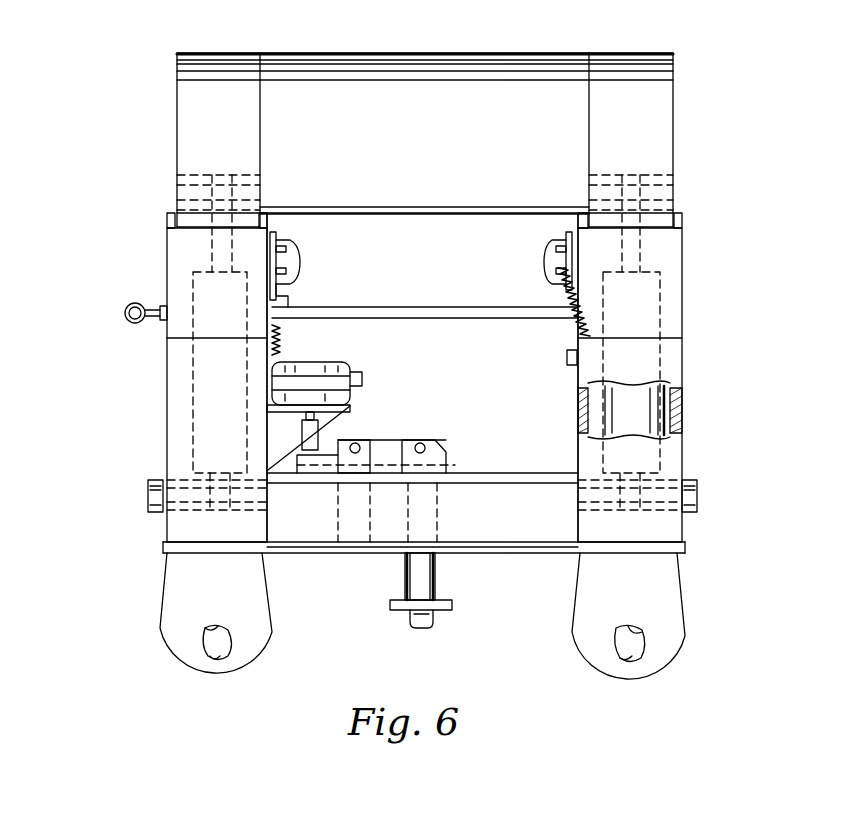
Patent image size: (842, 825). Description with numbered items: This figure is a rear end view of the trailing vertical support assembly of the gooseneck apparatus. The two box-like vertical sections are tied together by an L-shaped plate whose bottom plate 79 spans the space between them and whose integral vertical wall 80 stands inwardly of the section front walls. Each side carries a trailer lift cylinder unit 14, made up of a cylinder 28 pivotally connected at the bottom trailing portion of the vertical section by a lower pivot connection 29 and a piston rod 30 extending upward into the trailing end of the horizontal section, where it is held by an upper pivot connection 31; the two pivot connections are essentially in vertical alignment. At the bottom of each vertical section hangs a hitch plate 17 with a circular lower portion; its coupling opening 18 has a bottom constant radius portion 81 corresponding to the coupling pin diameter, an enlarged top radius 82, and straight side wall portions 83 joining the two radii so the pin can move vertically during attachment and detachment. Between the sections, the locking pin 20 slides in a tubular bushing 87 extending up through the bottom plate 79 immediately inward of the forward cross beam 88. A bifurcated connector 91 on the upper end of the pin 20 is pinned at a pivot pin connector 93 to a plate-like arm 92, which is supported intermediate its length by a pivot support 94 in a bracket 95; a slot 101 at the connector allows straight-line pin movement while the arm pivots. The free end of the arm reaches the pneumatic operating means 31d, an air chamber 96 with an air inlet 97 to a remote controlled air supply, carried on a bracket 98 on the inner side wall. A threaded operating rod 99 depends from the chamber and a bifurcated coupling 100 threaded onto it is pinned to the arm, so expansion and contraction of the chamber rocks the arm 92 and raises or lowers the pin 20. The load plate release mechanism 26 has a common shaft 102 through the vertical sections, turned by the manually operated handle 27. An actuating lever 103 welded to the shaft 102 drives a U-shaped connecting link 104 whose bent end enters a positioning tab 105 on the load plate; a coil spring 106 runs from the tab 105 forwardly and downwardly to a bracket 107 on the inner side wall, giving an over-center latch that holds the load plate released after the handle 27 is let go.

The trailer lift cylinder unit 14 is at (193, 381).
The hitch plate 17 is at (272, 664).
The coupling opening 18 is at (200, 638).
The locking pin 20 is at (430, 629).
The locking plate release mechanism 26 is at (310, 283).
The manually operated handle 27 is at (125, 313).
The cylinder 28 is at (660, 312).
The lower pivot connection 29 is at (148, 497).
The piston rod 30 is at (210, 248).
The upper pivot connection 31 is at (172, 193).
The connector 31d is at (360, 387).
The bottom plate 79 is at (319, 554).
The vertical wall 80 is at (445, 259).
The bottom constant radius portion 81 is at (210, 659).
The enlarged top radius 82 is at (203, 627).
The straight side wall portions 83 is at (650, 652).
The tubular bushing 87 is at (440, 575).
The forward cross beam 88 is at (544, 554).
The bifurcated connector 91 is at (446, 470).
The plate-like arm 92 is at (400, 440).
The pivot pin connector 93 is at (438, 446).
The pivot support 94 is at (358, 440).
The bracket 95 is at (344, 476).
The air chamber 96 is at (310, 362).
The air inlet 97 is at (360, 374).
The bracket 98 is at (290, 453).
The threaded operating rod 99 is at (305, 412).
The bifurcated coupling 100 is at (302, 432).
The slot 101 is at (420, 444).
The common shaft 102 is at (456, 330).
The actuating lever 103 is at (288, 302).
The connecting U-shaped link 104 is at (295, 250).
The positioning tab 105 is at (270, 230).
The coil spring 106 is at (272, 340).
The bracket 107 is at (570, 362).